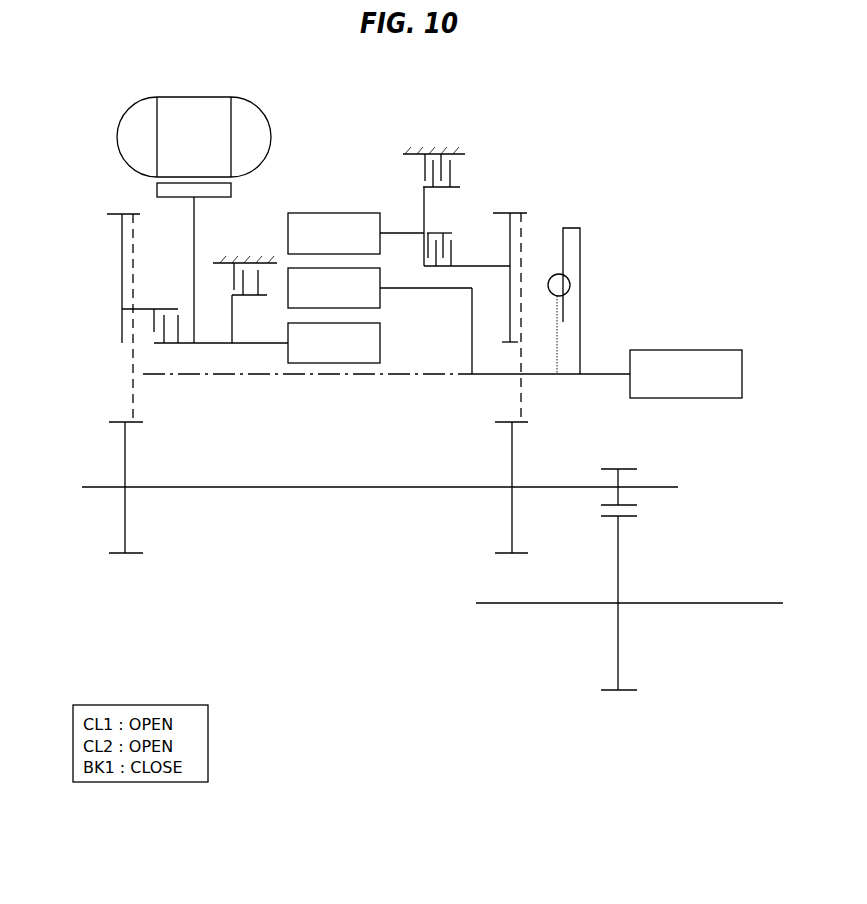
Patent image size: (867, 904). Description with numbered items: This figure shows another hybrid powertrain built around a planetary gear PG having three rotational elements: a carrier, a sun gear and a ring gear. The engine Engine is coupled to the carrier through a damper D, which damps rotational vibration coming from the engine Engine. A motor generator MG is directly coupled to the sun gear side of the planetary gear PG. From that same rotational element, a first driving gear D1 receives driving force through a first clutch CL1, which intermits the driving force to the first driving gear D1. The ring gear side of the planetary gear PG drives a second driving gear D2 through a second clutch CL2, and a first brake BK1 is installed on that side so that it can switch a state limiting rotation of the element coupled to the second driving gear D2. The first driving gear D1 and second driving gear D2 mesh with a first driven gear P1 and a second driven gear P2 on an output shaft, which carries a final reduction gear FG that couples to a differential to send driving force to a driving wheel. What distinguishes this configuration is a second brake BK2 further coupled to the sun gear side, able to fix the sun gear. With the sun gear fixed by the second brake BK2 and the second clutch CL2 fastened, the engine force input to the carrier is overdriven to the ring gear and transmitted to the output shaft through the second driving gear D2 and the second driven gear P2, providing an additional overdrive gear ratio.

The motor generator MG is at (194, 220).
The first driving gear D1 is at (113, 212).
The first clutch CL1 is at (143, 309).
The second brake BK2 is at (222, 285).
The planetary gear PG is at (350, 190).
The first brake BK1 is at (462, 167).
The second clutch CL2 is at (450, 233).
The second driving gear D2 is at (520, 212).
The damper D is at (571, 280).
The engine Engine is at (686, 374).
The first driven gear P1 is at (133, 555).
The second driven gear P2 is at (503, 555).
The final reduction gear FG is at (633, 505).